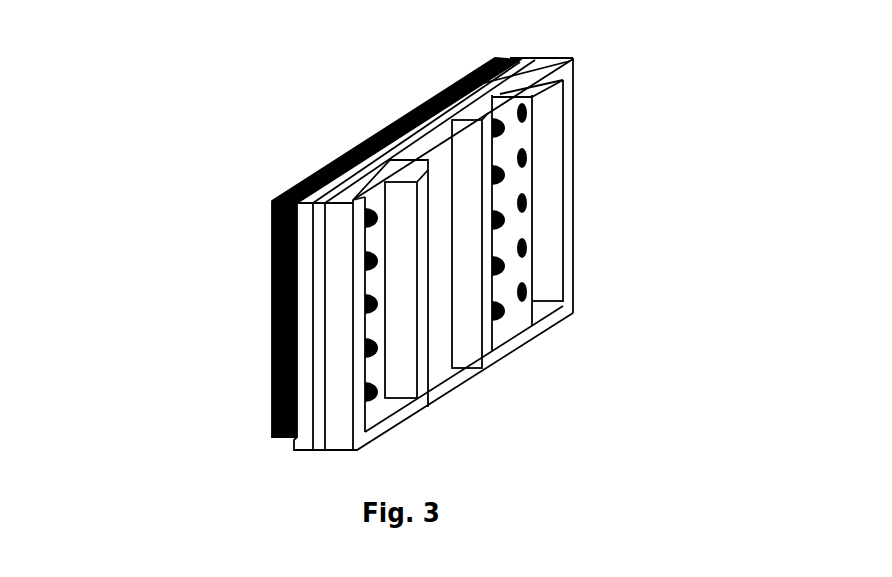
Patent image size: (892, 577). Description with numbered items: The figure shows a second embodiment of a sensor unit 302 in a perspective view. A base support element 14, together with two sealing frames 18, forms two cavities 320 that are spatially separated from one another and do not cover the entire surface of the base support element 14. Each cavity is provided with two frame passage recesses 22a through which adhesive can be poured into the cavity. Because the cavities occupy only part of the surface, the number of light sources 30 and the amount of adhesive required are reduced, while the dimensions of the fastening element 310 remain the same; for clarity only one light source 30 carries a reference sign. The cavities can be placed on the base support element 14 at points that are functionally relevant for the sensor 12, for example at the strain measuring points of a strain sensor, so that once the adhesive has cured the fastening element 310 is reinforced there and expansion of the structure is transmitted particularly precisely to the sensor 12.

The sensor unit 302 is at (437, 275).
The frame passage recesses 22a is at (312, 176).
The sensor 12 is at (265, 238).
The base support element 14 is at (306, 311).
The fastening element 310 is at (312, 454).
The sealing frames 18 is at (550, 112).
The light sources 30 is at (525, 202).
The cavities 320 is at (398, 363).